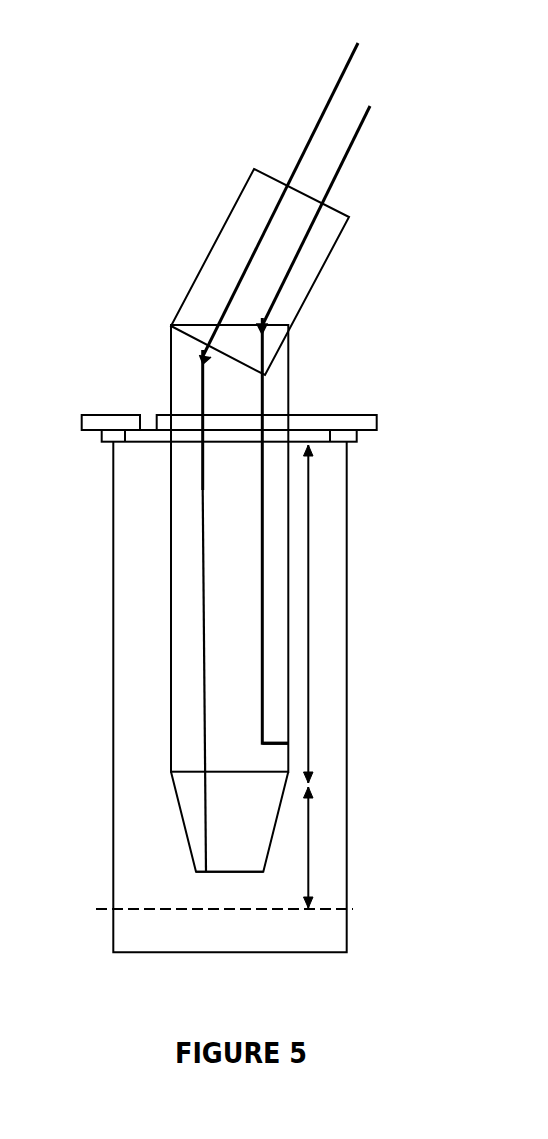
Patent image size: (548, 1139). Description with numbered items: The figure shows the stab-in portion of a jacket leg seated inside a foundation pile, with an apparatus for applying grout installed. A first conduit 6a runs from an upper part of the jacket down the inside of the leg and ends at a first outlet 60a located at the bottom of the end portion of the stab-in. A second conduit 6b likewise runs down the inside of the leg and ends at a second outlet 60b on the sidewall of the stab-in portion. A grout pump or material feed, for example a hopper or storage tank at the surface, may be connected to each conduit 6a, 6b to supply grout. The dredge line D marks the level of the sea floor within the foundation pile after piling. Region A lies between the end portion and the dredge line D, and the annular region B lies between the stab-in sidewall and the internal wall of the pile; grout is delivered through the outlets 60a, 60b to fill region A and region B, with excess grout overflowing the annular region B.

The first conduit 6a is at (203, 538).
The second conduit 6b is at (263, 480).
The first outlet 60a is at (206, 872).
The second outlet 60b is at (286, 743).
The region A is at (310, 837).
The annular region B is at (310, 560).
The dredge line D is at (335, 910).